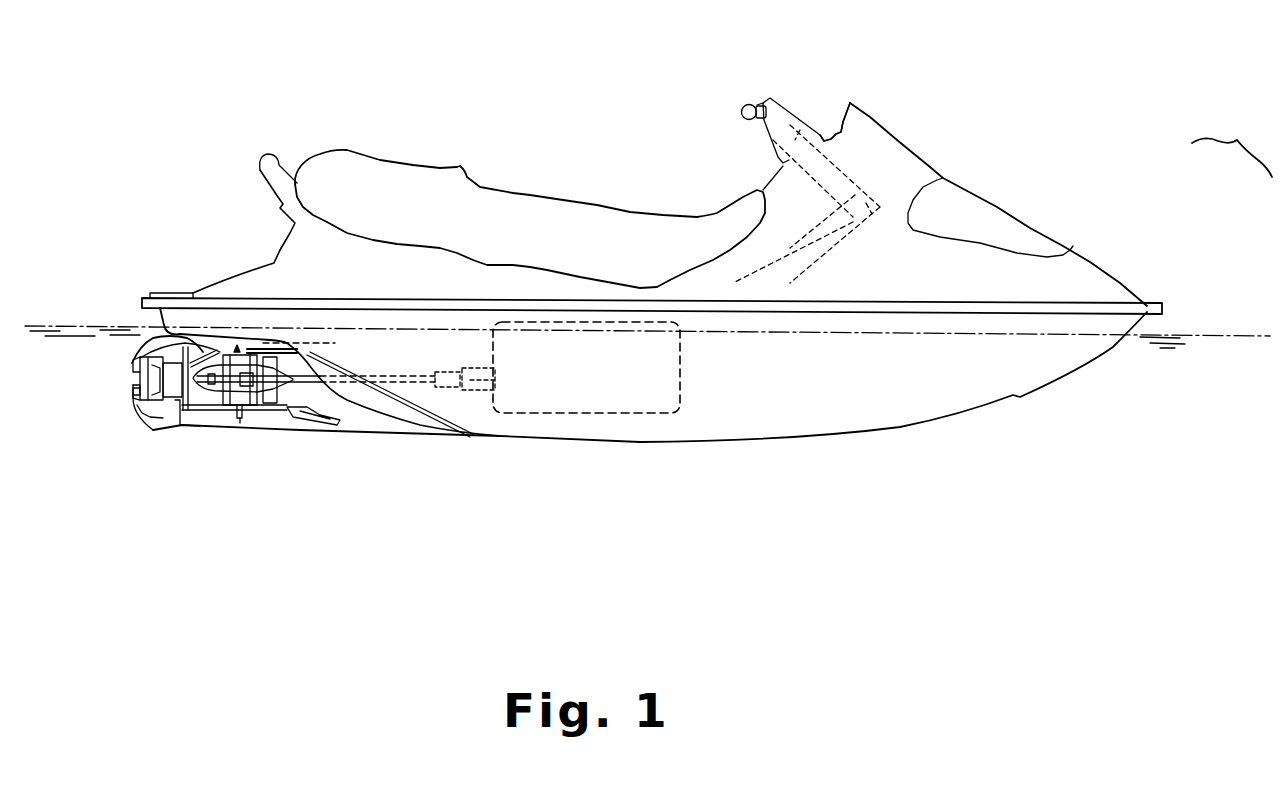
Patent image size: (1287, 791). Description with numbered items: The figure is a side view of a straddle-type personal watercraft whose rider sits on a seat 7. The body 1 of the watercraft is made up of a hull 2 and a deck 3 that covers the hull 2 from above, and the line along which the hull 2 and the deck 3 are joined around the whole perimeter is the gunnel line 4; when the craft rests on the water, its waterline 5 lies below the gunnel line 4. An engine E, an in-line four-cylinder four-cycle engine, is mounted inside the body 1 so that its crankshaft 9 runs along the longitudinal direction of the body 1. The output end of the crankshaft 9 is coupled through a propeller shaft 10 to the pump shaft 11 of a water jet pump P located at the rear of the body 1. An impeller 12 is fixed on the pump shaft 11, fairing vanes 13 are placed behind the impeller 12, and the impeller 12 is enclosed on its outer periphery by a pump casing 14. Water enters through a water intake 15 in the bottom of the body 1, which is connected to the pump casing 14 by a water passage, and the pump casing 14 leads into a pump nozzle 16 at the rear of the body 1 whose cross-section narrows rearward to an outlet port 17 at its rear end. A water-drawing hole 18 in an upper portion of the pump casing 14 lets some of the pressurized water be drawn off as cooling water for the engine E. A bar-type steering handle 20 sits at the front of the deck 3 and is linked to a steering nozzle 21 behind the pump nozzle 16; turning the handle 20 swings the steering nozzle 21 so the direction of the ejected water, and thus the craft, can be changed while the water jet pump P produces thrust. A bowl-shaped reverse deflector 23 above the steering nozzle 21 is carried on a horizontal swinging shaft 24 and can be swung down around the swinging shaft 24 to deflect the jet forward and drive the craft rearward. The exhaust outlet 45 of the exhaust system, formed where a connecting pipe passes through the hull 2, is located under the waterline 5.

The body 1 is at (1232, 145).
The hull 2 is at (1123, 323).
The deck 3 is at (1133, 291).
The gunnel line 4 is at (128, 298).
The waterline 5 is at (65, 325).
The seat 7 is at (330, 170).
The crankshaft 9 is at (494, 335).
The propeller shaft 10 is at (347, 392).
The pump shaft 11 is at (215, 400).
The impeller 12 is at (262, 412).
The fairing vanes 13 is at (252, 350).
The pump casing 14 is at (243, 414).
The water intake 15 is at (397, 425).
The pump nozzle 16 is at (190, 414).
The outlet port 17 is at (138, 393).
The water-drawing hole 18 is at (238, 400).
The steering handle 20 is at (745, 106).
The steering nozzle 21 is at (162, 398).
The reverse deflector 23 is at (157, 336).
The swinging shaft 24 is at (135, 368).
The exhaust outlet 45 is at (133, 395).
The water jet pump P is at (237, 350).
The engine E is at (682, 388).